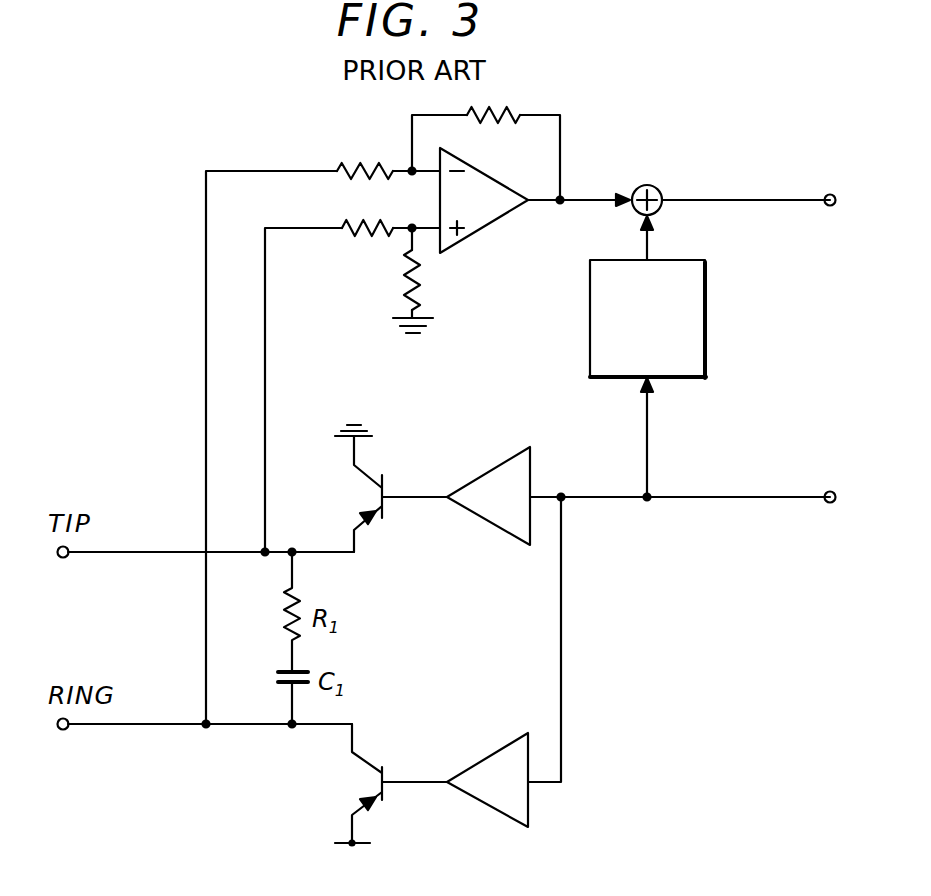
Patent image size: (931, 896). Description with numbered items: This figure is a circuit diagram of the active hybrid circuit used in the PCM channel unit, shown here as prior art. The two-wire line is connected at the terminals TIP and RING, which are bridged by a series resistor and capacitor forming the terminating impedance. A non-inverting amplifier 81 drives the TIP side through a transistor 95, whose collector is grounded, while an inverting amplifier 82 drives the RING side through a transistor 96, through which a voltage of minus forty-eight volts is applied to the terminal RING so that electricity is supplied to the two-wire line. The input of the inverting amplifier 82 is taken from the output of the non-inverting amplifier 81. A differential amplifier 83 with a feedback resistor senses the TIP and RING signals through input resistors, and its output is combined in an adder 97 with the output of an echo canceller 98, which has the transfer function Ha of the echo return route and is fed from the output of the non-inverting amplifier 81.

The non-inverting amplifier 81 is at (494, 464).
The inverting amplifier 82 is at (484, 752).
The differential amplifier 83 is at (490, 230).
The transistor 95 is at (370, 498).
The transistor 96 is at (358, 787).
The adder 97 is at (647, 180).
The echo canceller 98 is at (706, 340).